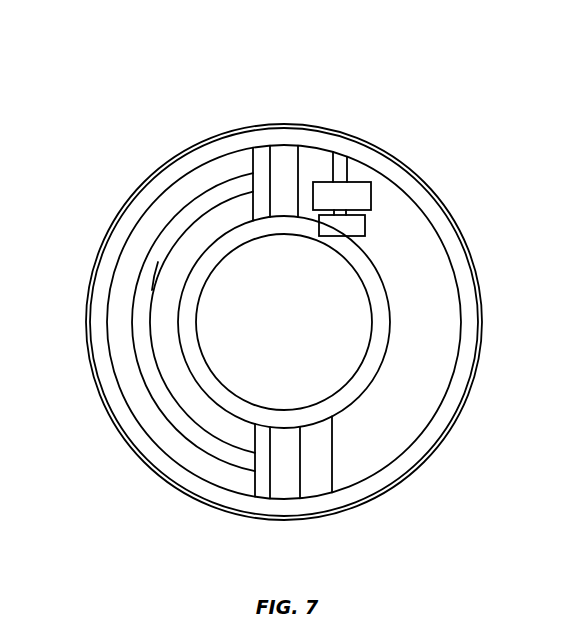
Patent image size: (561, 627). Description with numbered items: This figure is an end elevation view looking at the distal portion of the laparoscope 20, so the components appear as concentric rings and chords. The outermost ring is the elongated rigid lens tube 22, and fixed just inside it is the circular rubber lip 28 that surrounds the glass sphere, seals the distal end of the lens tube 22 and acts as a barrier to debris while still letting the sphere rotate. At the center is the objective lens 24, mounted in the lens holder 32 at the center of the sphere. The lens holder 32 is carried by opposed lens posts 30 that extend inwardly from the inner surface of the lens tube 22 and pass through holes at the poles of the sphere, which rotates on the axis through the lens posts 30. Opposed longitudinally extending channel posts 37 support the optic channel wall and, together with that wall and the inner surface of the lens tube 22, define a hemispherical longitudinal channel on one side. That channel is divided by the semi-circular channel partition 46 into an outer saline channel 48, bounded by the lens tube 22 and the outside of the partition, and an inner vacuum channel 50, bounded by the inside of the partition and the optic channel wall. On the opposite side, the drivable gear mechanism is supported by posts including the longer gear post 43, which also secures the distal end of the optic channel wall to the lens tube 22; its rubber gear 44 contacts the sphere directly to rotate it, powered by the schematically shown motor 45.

The laparoscope 20 is at (396, 115).
The lens tube 22 is at (340, 167).
The objective lens 24 is at (228, 368).
The rubber lip 28 is at (150, 196).
The lens posts 30 is at (284, 160).
The lens holder 32 is at (388, 299).
The channel posts 37 is at (258, 160).
The gear post 43 is at (340, 467).
The rubber gear 44 is at (364, 193).
The motor 45 is at (359, 228).
The channel partition 46 is at (145, 292).
The saline channel 48 is at (118, 377).
The vacuum channel 50 is at (163, 276).